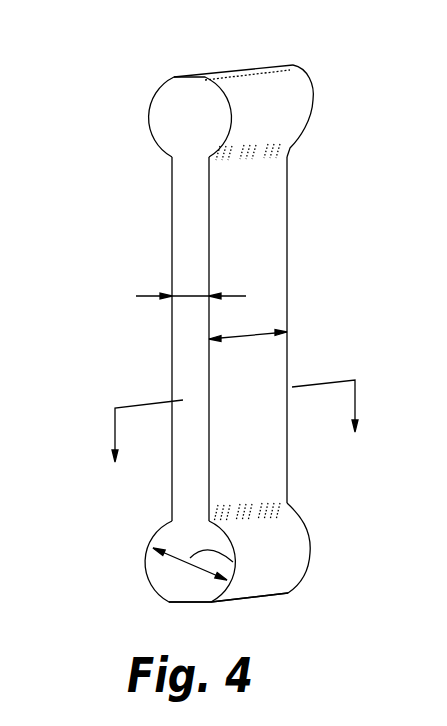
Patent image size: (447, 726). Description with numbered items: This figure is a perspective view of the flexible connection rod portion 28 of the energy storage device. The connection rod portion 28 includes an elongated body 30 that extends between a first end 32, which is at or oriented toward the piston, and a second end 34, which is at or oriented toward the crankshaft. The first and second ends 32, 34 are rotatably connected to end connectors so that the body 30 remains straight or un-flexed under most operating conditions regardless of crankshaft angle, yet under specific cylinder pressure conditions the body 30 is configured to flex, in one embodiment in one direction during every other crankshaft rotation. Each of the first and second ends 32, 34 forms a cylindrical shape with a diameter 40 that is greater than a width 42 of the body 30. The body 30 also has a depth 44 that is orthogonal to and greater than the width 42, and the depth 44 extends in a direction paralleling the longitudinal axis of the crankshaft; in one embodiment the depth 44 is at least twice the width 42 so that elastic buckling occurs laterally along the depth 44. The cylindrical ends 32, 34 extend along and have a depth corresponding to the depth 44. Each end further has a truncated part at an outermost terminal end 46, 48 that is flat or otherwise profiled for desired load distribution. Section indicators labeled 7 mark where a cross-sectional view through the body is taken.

The section line 7- 7 is at (236, 439).
The flexible connection rod portion 28 is at (200, 334).
The elongated body 30 is at (264, 243).
The first end 32 is at (189, 100).
The second end 34 is at (201, 567).
The diameter 40 is at (233, 560).
The width 42 is at (188, 296).
The depth 44 is at (247, 339).
The outermost terminal end 46 is at (198, 75).
The outermost terminal end 48 is at (200, 603).